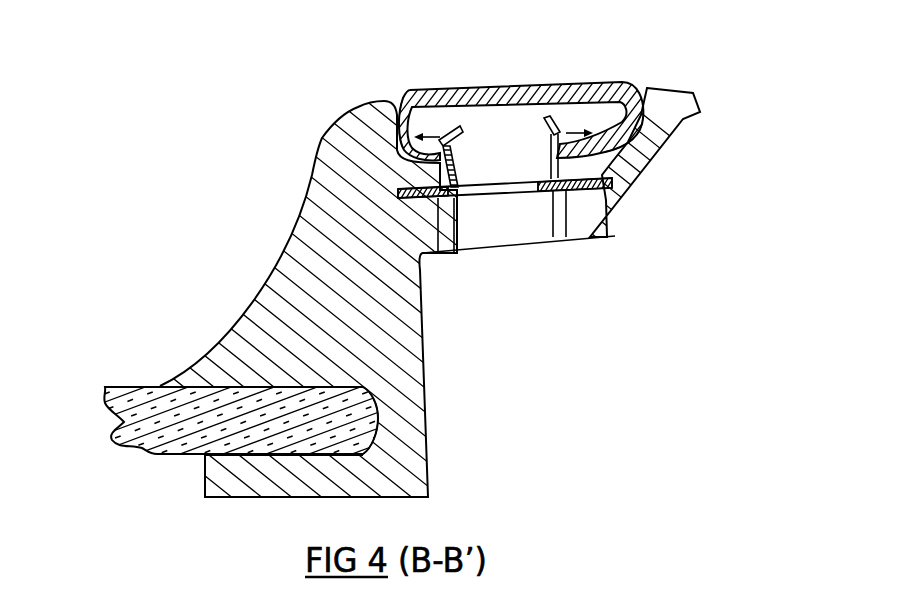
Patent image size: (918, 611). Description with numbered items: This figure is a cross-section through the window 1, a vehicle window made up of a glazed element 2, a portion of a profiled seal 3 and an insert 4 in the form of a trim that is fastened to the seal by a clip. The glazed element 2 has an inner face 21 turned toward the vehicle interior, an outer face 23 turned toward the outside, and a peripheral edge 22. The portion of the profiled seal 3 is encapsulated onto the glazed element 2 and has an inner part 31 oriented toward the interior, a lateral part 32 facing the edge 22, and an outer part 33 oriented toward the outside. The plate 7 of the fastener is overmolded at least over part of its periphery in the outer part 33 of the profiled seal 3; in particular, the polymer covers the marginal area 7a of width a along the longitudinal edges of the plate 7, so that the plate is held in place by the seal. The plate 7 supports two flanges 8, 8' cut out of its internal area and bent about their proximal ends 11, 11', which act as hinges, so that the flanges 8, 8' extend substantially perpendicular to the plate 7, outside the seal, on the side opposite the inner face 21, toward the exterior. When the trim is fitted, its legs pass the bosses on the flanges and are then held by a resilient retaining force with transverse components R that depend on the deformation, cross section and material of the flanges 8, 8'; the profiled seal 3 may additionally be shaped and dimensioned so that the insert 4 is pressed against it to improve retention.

The window 1 is at (163, 138).
The glazed element 2 is at (150, 412).
The profiled seal 3 is at (410, 372).
The insert 4 is at (407, 97).
The plate 7 is at (488, 192).
The marginal area 7a is at (433, 253).
The flange 8 is at (356, 131).
The flange 8' is at (661, 144).
The proximal end 11 is at (466, 265).
The proximal end 11' is at (575, 242).
The inner face 21 is at (135, 387).
The peripheral edge 22 is at (378, 437).
The outer face 23 is at (187, 455).
The inner part 31 is at (723, 78).
The lateral part 32 is at (723, 392).
The outer part 33 is at (723, 458).